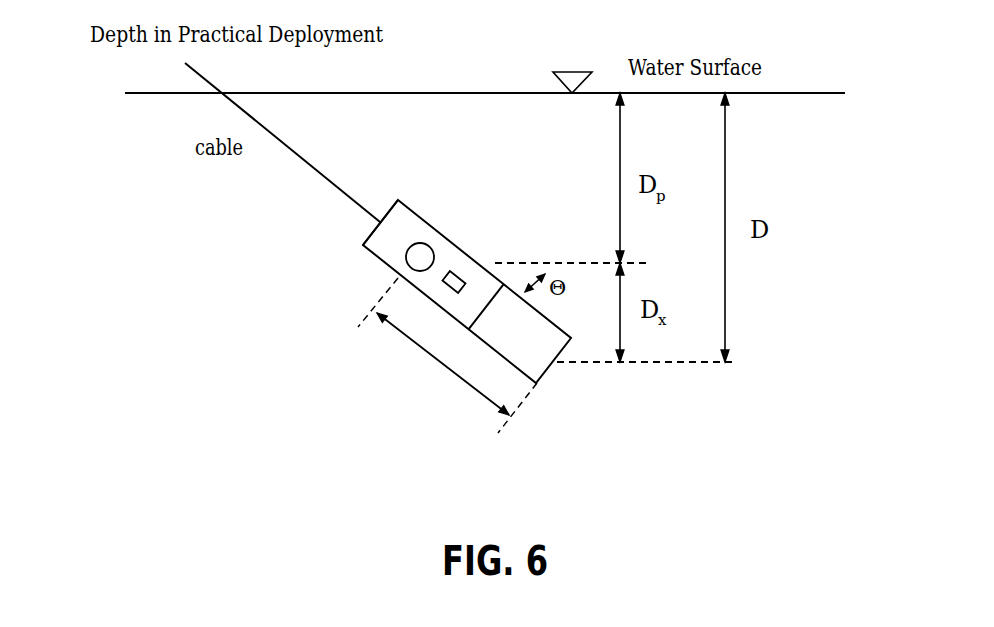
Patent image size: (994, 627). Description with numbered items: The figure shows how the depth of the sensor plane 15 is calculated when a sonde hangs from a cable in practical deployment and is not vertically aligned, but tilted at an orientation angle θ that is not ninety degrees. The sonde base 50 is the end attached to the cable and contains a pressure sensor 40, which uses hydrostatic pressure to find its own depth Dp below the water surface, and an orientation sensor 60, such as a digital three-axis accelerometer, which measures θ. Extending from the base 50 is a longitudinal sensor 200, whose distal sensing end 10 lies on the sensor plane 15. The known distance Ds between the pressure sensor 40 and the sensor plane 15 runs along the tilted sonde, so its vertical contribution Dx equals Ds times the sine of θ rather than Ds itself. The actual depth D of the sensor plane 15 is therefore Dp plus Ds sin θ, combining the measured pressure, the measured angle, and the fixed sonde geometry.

The distal sensing end 10 is at (545, 381).
The sensor plane 15 is at (733, 362).
The pressure sensor 40 is at (408, 265).
The sonde base 50 is at (366, 246).
The orientation sensor 60 is at (452, 273).
The longitudinal sensor 200 is at (513, 368).